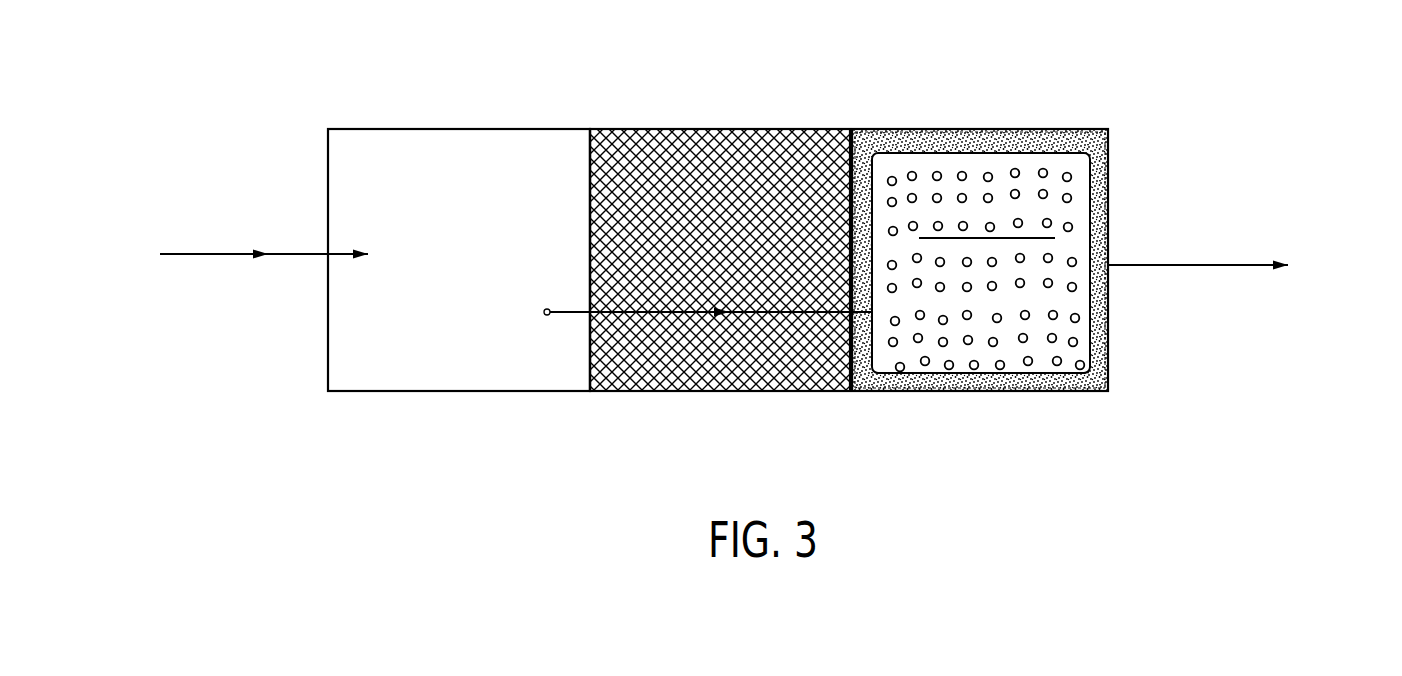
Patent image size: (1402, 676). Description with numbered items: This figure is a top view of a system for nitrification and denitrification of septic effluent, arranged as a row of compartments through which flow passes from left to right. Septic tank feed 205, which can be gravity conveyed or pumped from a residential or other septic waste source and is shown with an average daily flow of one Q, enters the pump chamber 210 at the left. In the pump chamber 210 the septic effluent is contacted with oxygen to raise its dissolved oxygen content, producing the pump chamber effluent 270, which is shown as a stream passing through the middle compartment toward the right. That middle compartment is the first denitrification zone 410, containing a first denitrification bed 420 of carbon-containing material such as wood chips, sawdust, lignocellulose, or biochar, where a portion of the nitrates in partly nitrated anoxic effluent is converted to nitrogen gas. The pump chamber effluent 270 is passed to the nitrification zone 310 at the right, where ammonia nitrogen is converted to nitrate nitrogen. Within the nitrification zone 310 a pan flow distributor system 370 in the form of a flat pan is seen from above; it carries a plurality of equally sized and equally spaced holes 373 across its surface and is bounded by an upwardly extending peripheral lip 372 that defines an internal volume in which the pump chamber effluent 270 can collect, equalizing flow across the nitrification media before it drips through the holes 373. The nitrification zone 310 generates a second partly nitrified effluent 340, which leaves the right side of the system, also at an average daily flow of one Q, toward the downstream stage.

The septic tank feed 205 is at (133, 276).
The pump chamber 210 is at (464, 127).
The pump chamber effluent 270 is at (544, 311).
The nitrification zone 310 is at (1046, 135).
The second partly nitrified effluent 340 is at (1248, 262).
The pan flow distributor system 370 is at (1093, 183).
The upwardly extending peripheral lip 372 is at (1097, 313).
The holes 373 is at (1028, 339).
The first denitrification zone 410 is at (750, 125).
The first denitrification bed 420 is at (799, 134).